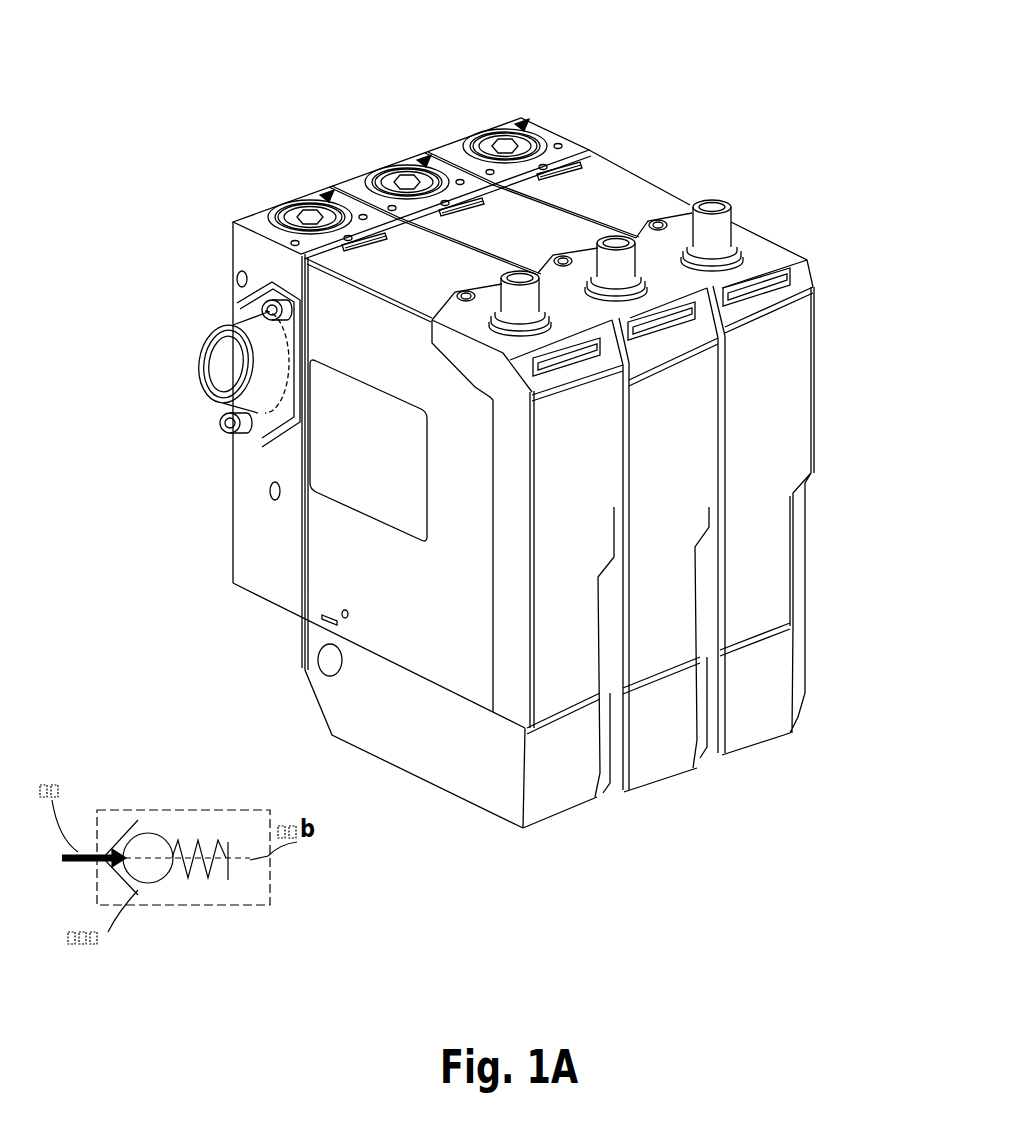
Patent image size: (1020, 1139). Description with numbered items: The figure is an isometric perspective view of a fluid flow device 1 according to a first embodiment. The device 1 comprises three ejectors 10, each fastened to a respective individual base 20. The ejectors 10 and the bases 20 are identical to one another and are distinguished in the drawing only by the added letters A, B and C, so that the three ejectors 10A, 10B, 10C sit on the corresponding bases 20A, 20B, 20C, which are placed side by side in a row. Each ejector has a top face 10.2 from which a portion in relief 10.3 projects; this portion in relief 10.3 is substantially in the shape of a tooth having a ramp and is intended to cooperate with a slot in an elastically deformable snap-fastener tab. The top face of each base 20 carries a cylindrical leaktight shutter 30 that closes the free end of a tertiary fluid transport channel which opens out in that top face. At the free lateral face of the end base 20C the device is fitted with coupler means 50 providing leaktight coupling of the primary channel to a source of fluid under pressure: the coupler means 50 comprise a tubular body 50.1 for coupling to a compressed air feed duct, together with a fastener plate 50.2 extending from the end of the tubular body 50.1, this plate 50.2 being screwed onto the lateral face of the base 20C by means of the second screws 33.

The fluid flow device 1 is at (746, 96).
The ejector 10 is at (602, 461).
The ejector 10A is at (758, 736).
The ejector 10B is at (667, 770).
The ejector 10C is at (560, 806).
The top face 10.2 is at (642, 200).
The portion in relief 10.3 is at (598, 167).
The base 20 is at (355, 160).
The base 20A is at (504, 112).
The base 20B is at (400, 150).
The base 20C is at (258, 216).
The leaktight shutter 30 is at (533, 135).
The second screws 33 is at (290, 311).
The coupler means 50 is at (256, 450).
The tubular body 50.1 is at (232, 324).
The fastener plate 50.2 is at (266, 409).